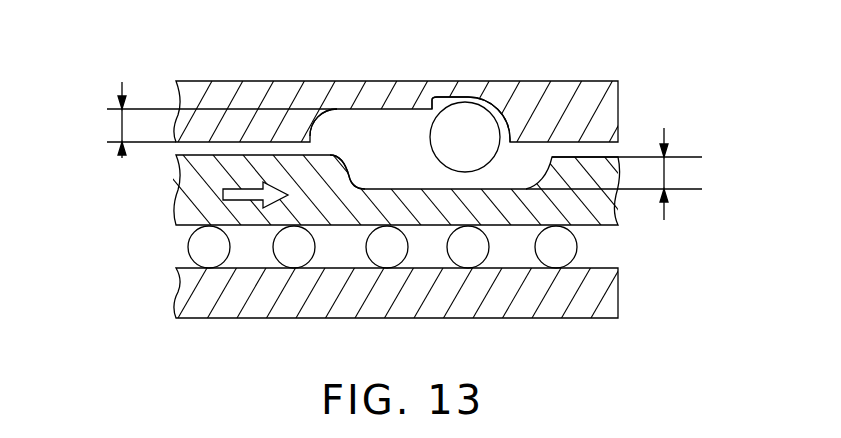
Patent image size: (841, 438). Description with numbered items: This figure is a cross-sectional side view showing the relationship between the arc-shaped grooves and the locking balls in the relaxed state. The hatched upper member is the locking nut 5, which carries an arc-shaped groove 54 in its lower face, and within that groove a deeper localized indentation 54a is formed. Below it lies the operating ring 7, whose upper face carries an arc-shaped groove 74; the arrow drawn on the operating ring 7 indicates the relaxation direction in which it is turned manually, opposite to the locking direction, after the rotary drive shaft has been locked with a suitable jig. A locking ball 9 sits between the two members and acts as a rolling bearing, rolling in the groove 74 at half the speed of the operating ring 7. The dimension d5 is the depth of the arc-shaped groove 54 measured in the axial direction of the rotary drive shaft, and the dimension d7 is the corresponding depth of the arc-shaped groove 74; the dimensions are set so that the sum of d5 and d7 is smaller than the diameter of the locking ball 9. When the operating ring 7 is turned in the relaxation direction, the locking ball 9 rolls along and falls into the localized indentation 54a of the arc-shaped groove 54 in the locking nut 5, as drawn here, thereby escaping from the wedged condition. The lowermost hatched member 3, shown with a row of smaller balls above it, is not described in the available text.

The base plate 3 is at (225, 298).
The locking nut 5 is at (226, 94).
The operating ring 7 is at (435, 213).
The locking ball 9 is at (463, 115).
The arc-shaped groove 54 is at (362, 110).
The localized indentation 54a is at (493, 120).
The arc-shaped groove 74 is at (358, 178).
The depth of arc-shaped groove d5 is at (120, 122).
The depth of arc-shaped groove d7 is at (665, 172).